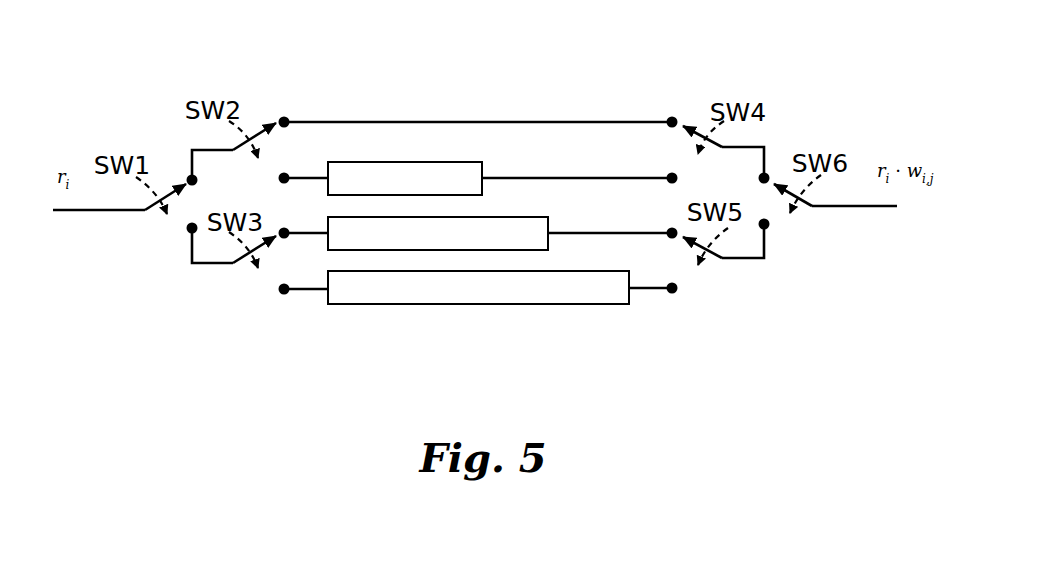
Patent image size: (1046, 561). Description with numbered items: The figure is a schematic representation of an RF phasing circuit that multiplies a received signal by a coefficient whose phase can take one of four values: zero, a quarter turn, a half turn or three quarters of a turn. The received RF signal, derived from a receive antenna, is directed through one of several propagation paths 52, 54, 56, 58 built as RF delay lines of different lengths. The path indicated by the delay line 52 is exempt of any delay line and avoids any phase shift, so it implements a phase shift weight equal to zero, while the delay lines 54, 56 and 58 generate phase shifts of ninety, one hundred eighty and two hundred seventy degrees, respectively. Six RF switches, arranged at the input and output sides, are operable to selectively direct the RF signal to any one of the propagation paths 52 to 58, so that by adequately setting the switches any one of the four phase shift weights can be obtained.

The RF delay line 52 is at (535, 121).
The RF delay line 54 is at (617, 177).
The RF delay line 56 is at (572, 232).
The RF delay line 58 is at (642, 288).